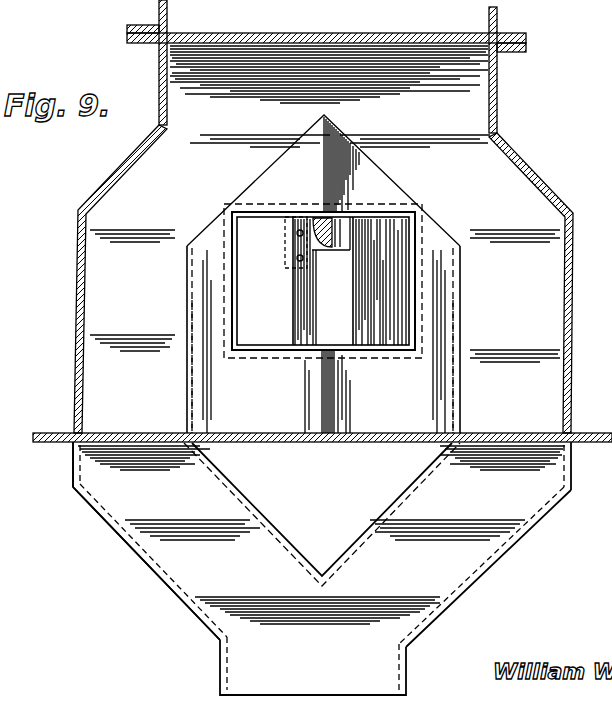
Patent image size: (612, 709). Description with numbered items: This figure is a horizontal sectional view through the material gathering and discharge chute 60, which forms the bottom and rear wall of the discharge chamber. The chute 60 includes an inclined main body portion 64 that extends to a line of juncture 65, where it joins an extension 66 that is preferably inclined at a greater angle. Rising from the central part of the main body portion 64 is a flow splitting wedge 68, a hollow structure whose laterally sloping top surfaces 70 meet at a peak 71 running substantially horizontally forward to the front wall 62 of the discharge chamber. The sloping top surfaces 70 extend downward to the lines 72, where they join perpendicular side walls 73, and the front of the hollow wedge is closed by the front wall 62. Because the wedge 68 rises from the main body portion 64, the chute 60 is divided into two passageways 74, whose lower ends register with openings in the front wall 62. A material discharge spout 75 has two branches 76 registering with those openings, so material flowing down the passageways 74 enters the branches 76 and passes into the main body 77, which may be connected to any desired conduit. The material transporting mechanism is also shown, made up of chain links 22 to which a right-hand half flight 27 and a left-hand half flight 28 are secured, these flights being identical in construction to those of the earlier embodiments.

The chain links 22 is at (328, 250).
The right-hand half flight 27 is at (379, 281).
The left-hand half flight 28 is at (283, 281).
The material gathering and discharge chute 60 is at (486, 124).
The front wall 62 is at (74, 460).
The main body portion 64 is at (139, 266).
The line of juncture 65 is at (497, 75).
The extension 66 is at (158, 66).
The flow splitting wedge 68 is at (263, 180).
The laterally sloping top surfaces 70 is at (324, 341).
The peak 71 is at (323, 172).
The lines 72 is at (187, 302).
The perpendicular side walls 73 is at (190, 362).
The passageways 74 is at (325, 204).
The material discharge spout 75 is at (188, 618).
The branches 76 is at (322, 565).
The main body 77 is at (313, 666).